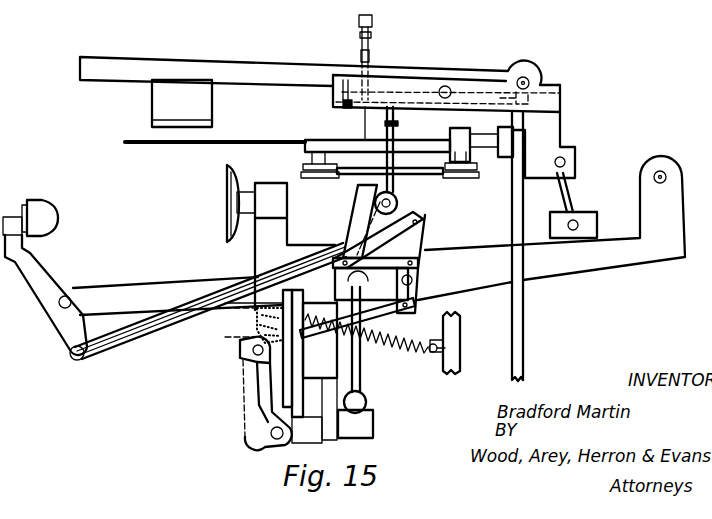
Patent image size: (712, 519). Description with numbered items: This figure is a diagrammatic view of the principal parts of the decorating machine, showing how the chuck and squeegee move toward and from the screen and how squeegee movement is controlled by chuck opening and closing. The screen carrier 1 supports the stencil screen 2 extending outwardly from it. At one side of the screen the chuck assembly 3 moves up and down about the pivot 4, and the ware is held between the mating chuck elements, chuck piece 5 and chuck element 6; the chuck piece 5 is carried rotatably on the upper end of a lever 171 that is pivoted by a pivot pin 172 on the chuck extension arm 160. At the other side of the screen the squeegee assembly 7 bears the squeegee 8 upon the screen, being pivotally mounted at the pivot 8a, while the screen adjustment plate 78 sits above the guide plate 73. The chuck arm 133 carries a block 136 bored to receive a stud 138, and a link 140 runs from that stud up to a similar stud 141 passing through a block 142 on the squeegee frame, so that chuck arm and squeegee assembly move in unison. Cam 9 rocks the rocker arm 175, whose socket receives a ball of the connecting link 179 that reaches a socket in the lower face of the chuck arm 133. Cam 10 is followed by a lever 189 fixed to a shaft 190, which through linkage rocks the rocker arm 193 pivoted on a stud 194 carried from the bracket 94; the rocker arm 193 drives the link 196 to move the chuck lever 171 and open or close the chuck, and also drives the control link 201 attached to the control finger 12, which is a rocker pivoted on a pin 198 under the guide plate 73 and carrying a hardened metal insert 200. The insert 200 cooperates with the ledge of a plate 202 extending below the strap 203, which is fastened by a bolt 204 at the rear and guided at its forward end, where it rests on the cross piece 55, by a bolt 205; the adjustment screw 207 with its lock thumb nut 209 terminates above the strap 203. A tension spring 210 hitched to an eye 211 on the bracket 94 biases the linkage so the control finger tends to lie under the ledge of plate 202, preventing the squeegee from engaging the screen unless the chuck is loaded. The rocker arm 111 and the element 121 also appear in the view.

The squeegee assembly 7 is at (394, 65).
The plate 202 is at (432, 98).
The pivot 8a is at (533, 81).
The bolt 204 is at (560, 98).
The adjustment screw 207 is at (361, 33).
The lock thumb nut 209 is at (361, 58).
The squeegee 8 is at (214, 109).
The stencil screen 2 is at (182, 146).
The screen carrier 1 is at (363, 141).
The strap 203 is at (500, 111).
The screen adjustment plate 78 is at (325, 146).
The bolt 205 is at (346, 108).
The cross piece 55 is at (367, 136).
The metal insert 200 is at (395, 118).
The control finger 12 is at (399, 125).
The guide plate 73 is at (345, 176).
The pin 198 is at (398, 204).
The chuck element 6 is at (224, 205).
The lever 171 is at (30, 265).
The pivot pin 172 is at (60, 306).
The chuck piece 5 is at (60, 217).
The chuck extension arm 160 is at (128, 291).
The chuck assembly 3 is at (212, 285).
The link 196 is at (157, 334).
The control link 201 is at (385, 260).
The stud 194 is at (428, 274).
The rocker arm 193 is at (437, 305).
The guide block 121 is at (268, 313).
The lever 189 is at (240, 348).
The shaft 190 is at (268, 436).
The cam 10 is at (280, 368).
The cam 9 is at (300, 388).
The rocker arm 175 is at (374, 427).
The connecting link 179 is at (362, 381).
The tension spring 210 is at (406, 353).
The eye 211 is at (447, 337).
The bracket 94 is at (450, 359).
The rocker arm 111 is at (523, 328).
The block 142 is at (575, 153).
The stud 141 is at (566, 163).
The link 140 is at (569, 198).
The stud 138 is at (580, 224).
The block 136 is at (590, 233).
The chuck arm 133 is at (603, 263).
The pivot 4 is at (667, 178).